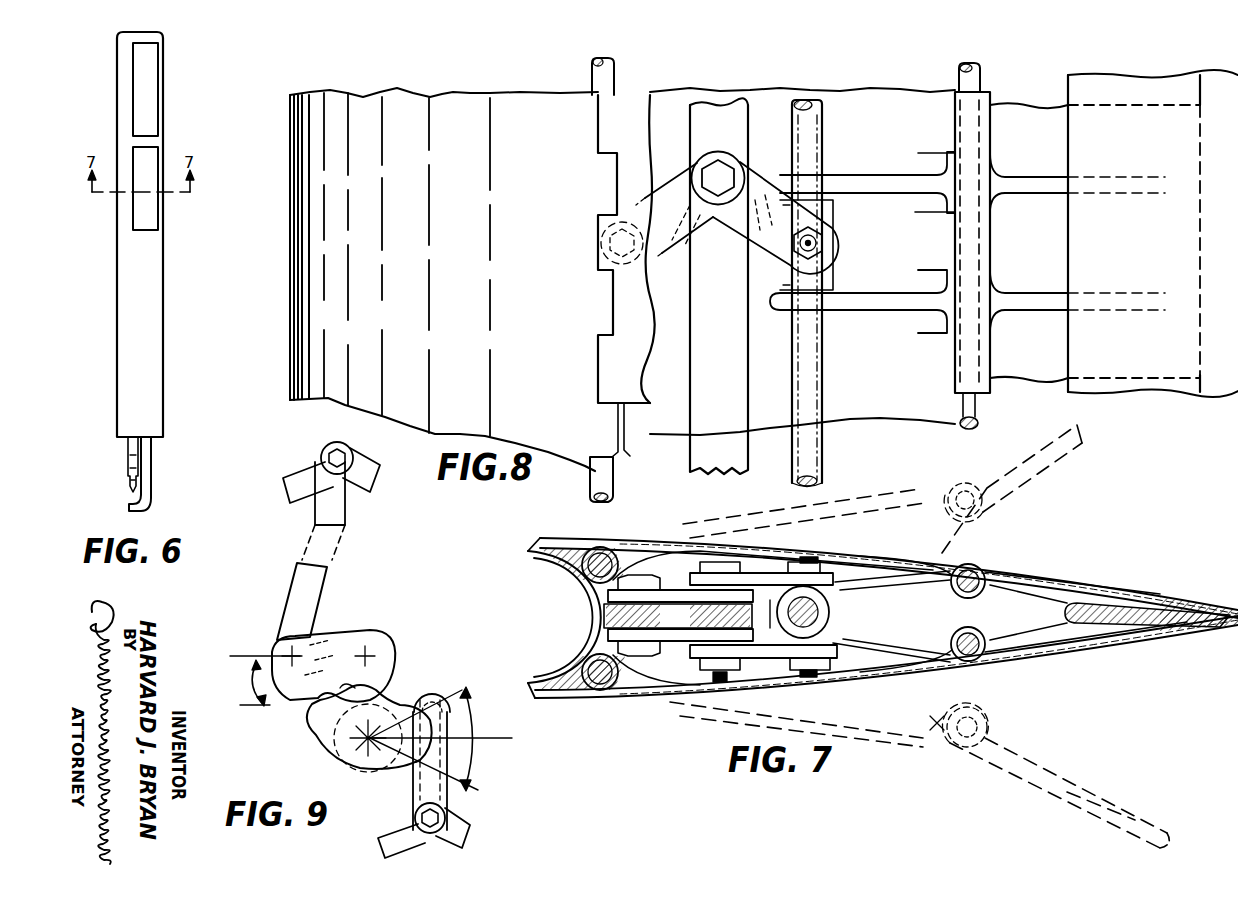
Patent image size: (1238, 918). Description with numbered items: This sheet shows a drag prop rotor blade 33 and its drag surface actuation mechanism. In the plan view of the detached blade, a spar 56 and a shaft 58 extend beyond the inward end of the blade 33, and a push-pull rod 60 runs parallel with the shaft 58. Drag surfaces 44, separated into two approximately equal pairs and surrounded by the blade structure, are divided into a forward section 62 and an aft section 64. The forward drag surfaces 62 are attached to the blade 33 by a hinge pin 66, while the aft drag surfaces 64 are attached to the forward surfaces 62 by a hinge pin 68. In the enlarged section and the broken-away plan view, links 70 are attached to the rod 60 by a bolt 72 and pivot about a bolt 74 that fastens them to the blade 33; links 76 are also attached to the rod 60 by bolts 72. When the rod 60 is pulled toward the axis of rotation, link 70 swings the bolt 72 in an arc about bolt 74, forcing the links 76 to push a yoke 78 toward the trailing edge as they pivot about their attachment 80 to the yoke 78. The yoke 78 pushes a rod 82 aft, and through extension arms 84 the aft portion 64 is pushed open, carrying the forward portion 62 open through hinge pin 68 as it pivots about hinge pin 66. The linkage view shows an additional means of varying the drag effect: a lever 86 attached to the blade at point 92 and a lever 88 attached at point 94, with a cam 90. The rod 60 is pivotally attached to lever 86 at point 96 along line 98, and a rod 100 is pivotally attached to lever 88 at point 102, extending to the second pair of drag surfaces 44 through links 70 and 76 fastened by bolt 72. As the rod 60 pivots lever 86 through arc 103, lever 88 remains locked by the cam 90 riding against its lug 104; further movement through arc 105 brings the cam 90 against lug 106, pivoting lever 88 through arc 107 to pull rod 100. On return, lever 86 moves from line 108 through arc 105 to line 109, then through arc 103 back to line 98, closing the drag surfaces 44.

In FIG. 6, the rotor blade 33 is at (163, 357).
In FIG. 8, the rotor blade 33 is at (490, 358).
In FIG. 7, the rotor blade 33 is at (1213, 628).
In FIG. 6, the drag surfaces 44 is at (152, 163).
In FIG. 6, the spar 56 is at (127, 455).
In FIG. 6, the shaft 58 is at (130, 485).
In FIG. 6, the push-pull rod 60 is at (151, 475).
In FIG. 8, the push-pull rod 60 is at (730, 378).
In FIG. 7, the push-pull rod 60 is at (726, 628).
In FIG. 9, the push-pull rod 60 is at (413, 792).
In FIG. 8, the forward drag surface section 62 is at (876, 422).
In FIG. 7, the forward drag surface section 62 is at (684, 524).
In FIG. 8, the aft drag surface section 64 is at (1046, 380).
In FIG. 7, the aft drag surface section 64 is at (1050, 572).
In FIG. 8, the hinge pin 66 is at (613, 475).
In FIG. 7, the hinge pin 66 is at (606, 693).
In FIG. 8, the hinge pin 68 is at (979, 428).
In FIG. 7, the hinge pin 68 is at (982, 659).
In FIG. 8, the links 70 is at (686, 255).
In FIG. 7, the links 70 is at (660, 596).
In FIG. 9, the links 70 is at (300, 473).
In FIG. 8, the bolt 72 is at (718, 161).
In FIG. 7, the bolt 72 is at (712, 675).
In FIG. 9, the bolt 72 is at (333, 452).
In FIG. 8, the bolt 74 is at (604, 250).
In FIG. 7, the bolt 74 is at (622, 588).
In FIG. 8, the links 76 is at (770, 258).
In FIG. 7, the links 76 is at (770, 576).
In FIG. 9, the links 76 is at (362, 468).
In FIG. 8, the yoke 78 is at (836, 267).
In FIG. 7, the yoke 78 is at (786, 628).
In FIG. 8, the attachment 80 is at (820, 242).
In FIG. 8, the rod 82 is at (824, 368).
In FIG. 7, the rod 82 is at (784, 607).
In FIG. 8, the extension arms 84 is at (883, 178).
In FIG. 7, the extension arms 84 is at (935, 606).
In FIG. 9, the lever 86 is at (345, 759).
In FIG. 9, the lever 88 is at (372, 636).
In FIG. 9, the cam 90 is at (328, 738).
In FIG. 9, the point 92 is at (368, 766).
In FIG. 9, the point 94 is at (362, 647).
In FIG. 9, the point 96 is at (450, 695).
In FIG. 9, the line 98 is at (461, 690).
In FIG. 9, the rod 100 is at (295, 576).
In FIG. 9, the point 102 is at (278, 650).
In FIG. 9, the arc 103 is at (479, 713).
In FIG. 9, the lug 104 is at (250, 672).
In FIG. 9, the arc 105 is at (478, 759).
In FIG. 9, the lug 106 is at (396, 696).
In FIG. 9, the arc 107 is at (262, 697).
In FIG. 9, the line 108 is at (476, 786).
In FIG. 9, the line 109 is at (506, 738).